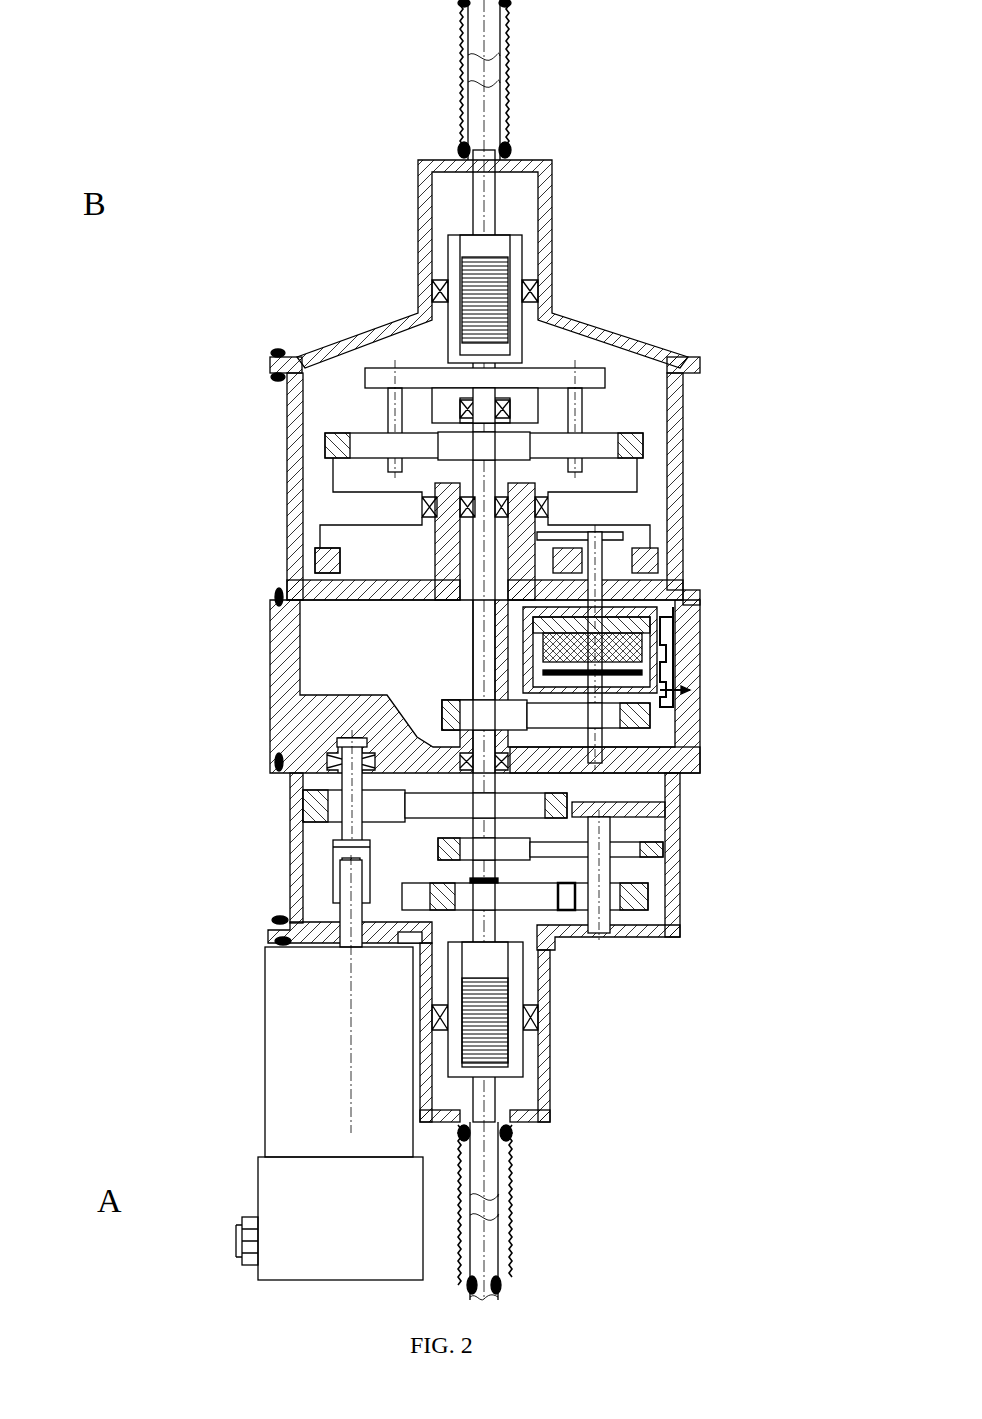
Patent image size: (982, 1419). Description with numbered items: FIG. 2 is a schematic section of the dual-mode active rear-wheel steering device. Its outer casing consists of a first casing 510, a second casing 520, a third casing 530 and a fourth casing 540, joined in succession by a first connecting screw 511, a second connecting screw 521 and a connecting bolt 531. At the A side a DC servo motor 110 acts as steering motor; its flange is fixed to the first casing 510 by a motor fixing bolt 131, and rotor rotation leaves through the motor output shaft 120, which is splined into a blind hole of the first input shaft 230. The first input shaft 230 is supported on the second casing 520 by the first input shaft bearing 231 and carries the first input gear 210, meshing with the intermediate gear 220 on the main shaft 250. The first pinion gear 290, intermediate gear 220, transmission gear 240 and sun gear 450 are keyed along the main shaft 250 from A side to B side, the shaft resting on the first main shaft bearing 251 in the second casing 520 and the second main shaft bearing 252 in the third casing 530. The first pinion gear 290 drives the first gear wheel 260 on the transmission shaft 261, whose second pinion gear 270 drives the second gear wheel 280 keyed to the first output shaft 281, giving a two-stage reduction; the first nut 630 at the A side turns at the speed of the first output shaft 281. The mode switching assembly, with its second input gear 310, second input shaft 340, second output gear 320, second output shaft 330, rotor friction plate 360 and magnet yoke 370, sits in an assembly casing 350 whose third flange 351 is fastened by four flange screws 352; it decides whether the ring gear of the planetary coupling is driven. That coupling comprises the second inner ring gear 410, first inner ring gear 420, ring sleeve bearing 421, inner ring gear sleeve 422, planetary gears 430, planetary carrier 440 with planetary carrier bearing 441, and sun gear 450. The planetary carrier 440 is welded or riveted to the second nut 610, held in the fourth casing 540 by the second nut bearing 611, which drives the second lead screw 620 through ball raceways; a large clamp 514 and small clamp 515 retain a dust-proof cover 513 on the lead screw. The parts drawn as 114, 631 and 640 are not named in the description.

The DC servo motor 110 is at (297, 1045).
The motor connector 114 is at (238, 1240).
The motor output shaft 120 is at (325, 940).
The motor fixing bolt 131 is at (347, 910).
The first input gear 210 is at (342, 847).
The intermediate gear 220 is at (433, 807).
The first input shaft 230 is at (293, 892).
The first input shaft bearing 231 is at (345, 745).
The transmission gear 240 is at (567, 715).
The main shaft 250 is at (483, 677).
The first main shaft bearing 251 is at (330, 762).
The second main shaft bearing 252 is at (418, 496).
The first gear wheel 260 is at (672, 870).
The transmission shaft 261 is at (627, 850).
The second pinion gear 270 is at (492, 902).
The second gear wheel 280 is at (475, 850).
The first output shaft 281 is at (567, 897).
The first pinion gear 290 is at (603, 863).
The second input gear 310 is at (690, 785).
The second output gear 320 is at (512, 575).
The second output shaft 330 is at (600, 562).
The second input shaft 340 is at (688, 760).
The assembly casing 350 is at (652, 622).
The third flange 351 is at (660, 628).
The flange screws 352 is at (692, 690).
The rotor friction plate 360 is at (672, 705).
The magnet yoke 370 is at (622, 648).
The second inner ring gear 410 is at (675, 592).
The first inner ring gear 420 is at (698, 360).
The ring sleeve bearing 421 is at (637, 475).
The inner ring gear sleeve 422 is at (650, 530).
The planetary gears 430 is at (297, 420).
The planetary carrier 440 is at (375, 445).
The planetary carrier bearing 441 is at (460, 398).
The sun gear 450 is at (335, 475).
The first casing 510 is at (355, 930).
The first connecting screw 511 is at (286, 770).
The dust-proof cover 513 is at (458, 1225).
The large clamp 514 is at (505, 1140).
The small clamp 515 is at (502, 1283).
The second casing 520 is at (283, 633).
The second connecting screw 521 is at (278, 593).
The third casing 530 is at (295, 472).
The connecting bolt 531 is at (285, 362).
The fourth casing 540 is at (385, 372).
The second nut 610 is at (432, 243).
The second nut bearing 611 is at (462, 300).
The second lead screw 620 is at (453, 272).
The first nut 630 is at (535, 1075).
The lower bearing block 631 is at (520, 1050).
The lower spring 640 is at (548, 1060).